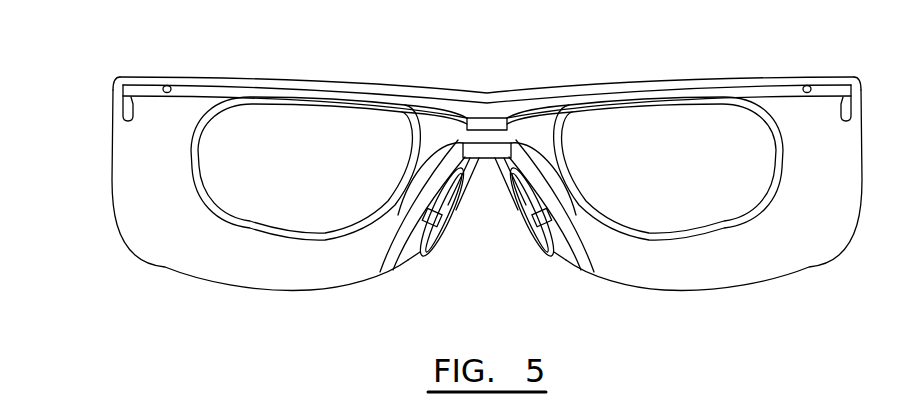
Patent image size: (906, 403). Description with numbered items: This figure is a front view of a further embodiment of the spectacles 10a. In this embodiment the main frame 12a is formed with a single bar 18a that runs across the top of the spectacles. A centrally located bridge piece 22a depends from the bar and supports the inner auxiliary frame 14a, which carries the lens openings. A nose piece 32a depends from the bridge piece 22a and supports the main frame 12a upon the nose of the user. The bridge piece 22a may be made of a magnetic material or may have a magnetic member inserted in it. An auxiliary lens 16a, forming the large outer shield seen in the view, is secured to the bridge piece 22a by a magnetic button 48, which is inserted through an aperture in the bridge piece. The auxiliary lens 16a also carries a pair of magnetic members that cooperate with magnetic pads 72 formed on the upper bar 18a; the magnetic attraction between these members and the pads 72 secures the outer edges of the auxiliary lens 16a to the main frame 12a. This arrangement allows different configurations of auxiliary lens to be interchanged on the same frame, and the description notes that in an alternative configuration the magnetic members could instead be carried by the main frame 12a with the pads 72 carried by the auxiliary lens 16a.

The spectacles 10a is at (613, 65).
The main frame 12a is at (416, 89).
The inner auxiliary frame 14a is at (193, 148).
The auxiliary lens 16a is at (166, 259).
The bar 18a is at (208, 85).
The bridge piece 22a is at (488, 150).
The nose piece 32a is at (407, 262).
The magnetic button 48 is at (490, 118).
The magnetic pads 72 is at (164, 86).